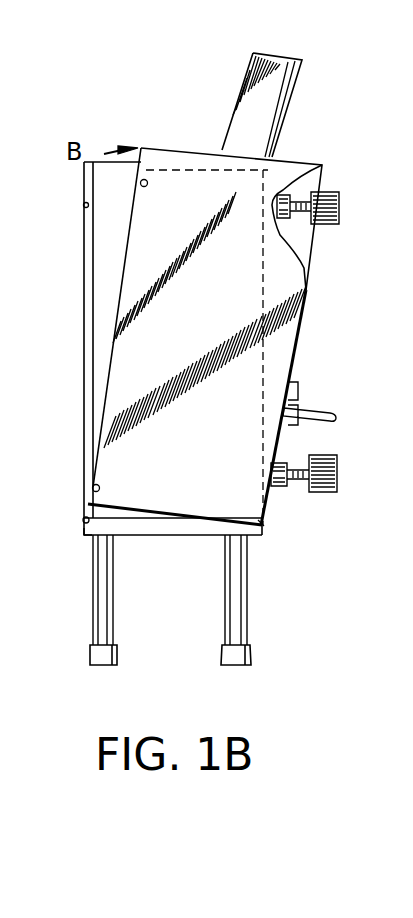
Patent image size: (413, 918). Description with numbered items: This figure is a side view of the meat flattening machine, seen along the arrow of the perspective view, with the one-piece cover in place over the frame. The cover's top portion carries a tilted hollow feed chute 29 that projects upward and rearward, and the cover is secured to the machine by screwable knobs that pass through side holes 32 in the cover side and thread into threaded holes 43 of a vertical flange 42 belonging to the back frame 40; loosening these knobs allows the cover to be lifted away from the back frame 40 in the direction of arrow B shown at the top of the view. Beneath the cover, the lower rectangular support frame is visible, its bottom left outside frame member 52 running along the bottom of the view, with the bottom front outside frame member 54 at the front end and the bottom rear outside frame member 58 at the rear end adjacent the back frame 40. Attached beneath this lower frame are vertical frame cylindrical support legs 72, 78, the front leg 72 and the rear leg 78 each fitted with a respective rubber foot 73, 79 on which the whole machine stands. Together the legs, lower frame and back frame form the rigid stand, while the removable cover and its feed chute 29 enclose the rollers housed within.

The tilted hollow feed chute 29 is at (286, 102).
The side hole 32 is at (148, 183).
The back frame 40 is at (84, 302).
The vertical flange 42 is at (92, 386).
The threaded hole 43 is at (83, 205).
The bottom left outside frame member 52 is at (186, 536).
The bottom front outside frame member 54 is at (263, 527).
The bottom rear outside frame member 58 is at (84, 535).
The vertical frame cylindrical support leg 72 is at (245, 607).
The rubber foot 73 is at (250, 653).
The vertical frame cylindrical support leg 78 is at (96, 583).
The rubber foot 79 is at (90, 656).